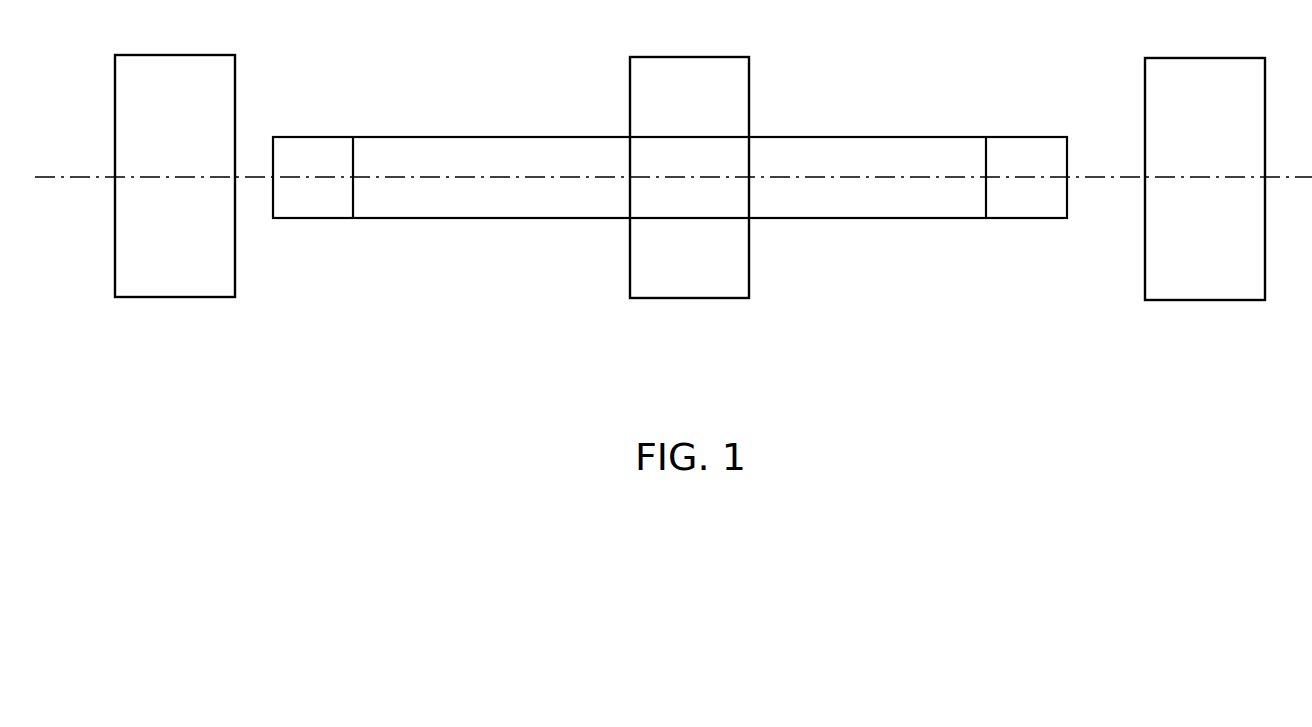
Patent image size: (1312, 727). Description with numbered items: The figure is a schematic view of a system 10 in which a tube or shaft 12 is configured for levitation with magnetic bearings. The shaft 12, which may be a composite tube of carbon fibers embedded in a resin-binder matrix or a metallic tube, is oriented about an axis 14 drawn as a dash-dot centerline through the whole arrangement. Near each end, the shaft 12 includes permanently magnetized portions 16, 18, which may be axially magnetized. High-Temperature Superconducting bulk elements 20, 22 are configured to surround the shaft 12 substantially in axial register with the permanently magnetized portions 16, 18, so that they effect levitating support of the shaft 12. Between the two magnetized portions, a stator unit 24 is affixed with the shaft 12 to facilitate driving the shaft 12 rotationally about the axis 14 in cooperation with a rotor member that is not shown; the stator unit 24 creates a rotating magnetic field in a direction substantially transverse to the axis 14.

The system 10 is at (383, 418).
The shaft 12 is at (470, 137).
The axis 14 is at (70, 175).
The permanently magnetized portion 16 is at (318, 218).
The permanently magnetized portion 18 is at (1042, 219).
The High-Temperature Superconducting bulk element 20 is at (177, 297).
The High-Temperature Superconducting bulk element 22 is at (1175, 300).
The stator unit 24 is at (693, 298).